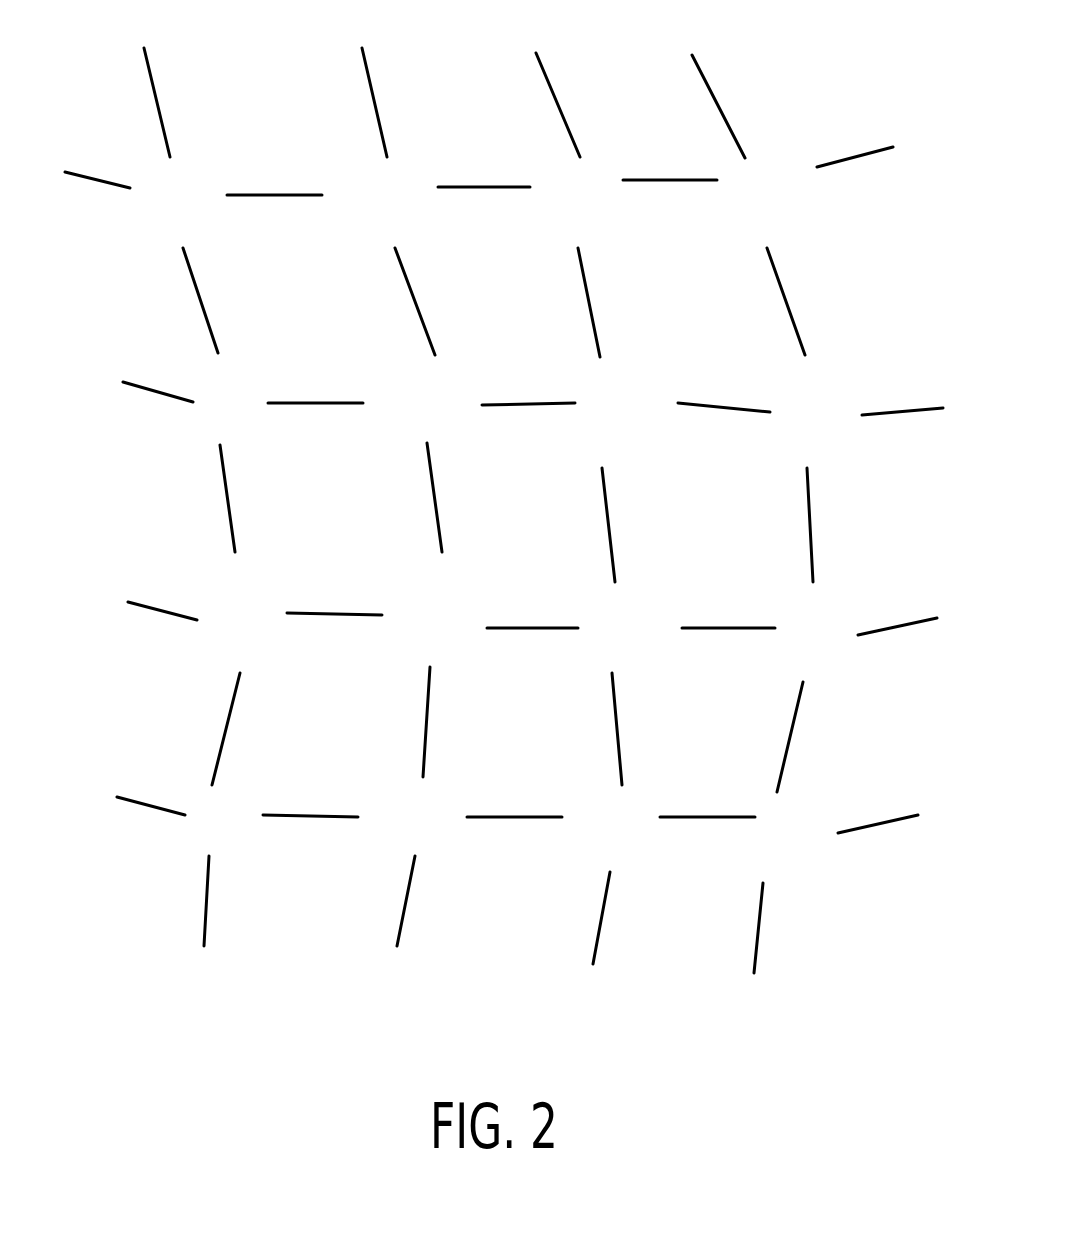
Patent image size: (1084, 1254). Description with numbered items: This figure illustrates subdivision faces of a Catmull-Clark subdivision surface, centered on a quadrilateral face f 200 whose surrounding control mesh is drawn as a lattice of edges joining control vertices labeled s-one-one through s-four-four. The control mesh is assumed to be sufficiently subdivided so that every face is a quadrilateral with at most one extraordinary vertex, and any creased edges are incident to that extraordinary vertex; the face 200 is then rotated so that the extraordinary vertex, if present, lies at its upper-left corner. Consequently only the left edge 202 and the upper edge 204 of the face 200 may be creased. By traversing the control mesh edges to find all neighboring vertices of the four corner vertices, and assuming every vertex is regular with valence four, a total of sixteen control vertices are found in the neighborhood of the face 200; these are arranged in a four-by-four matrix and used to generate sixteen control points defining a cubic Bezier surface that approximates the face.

The quadrilateral face 200 is at (504, 510).
The left edge 202 is at (427, 452).
The upper edge 204 is at (545, 403).